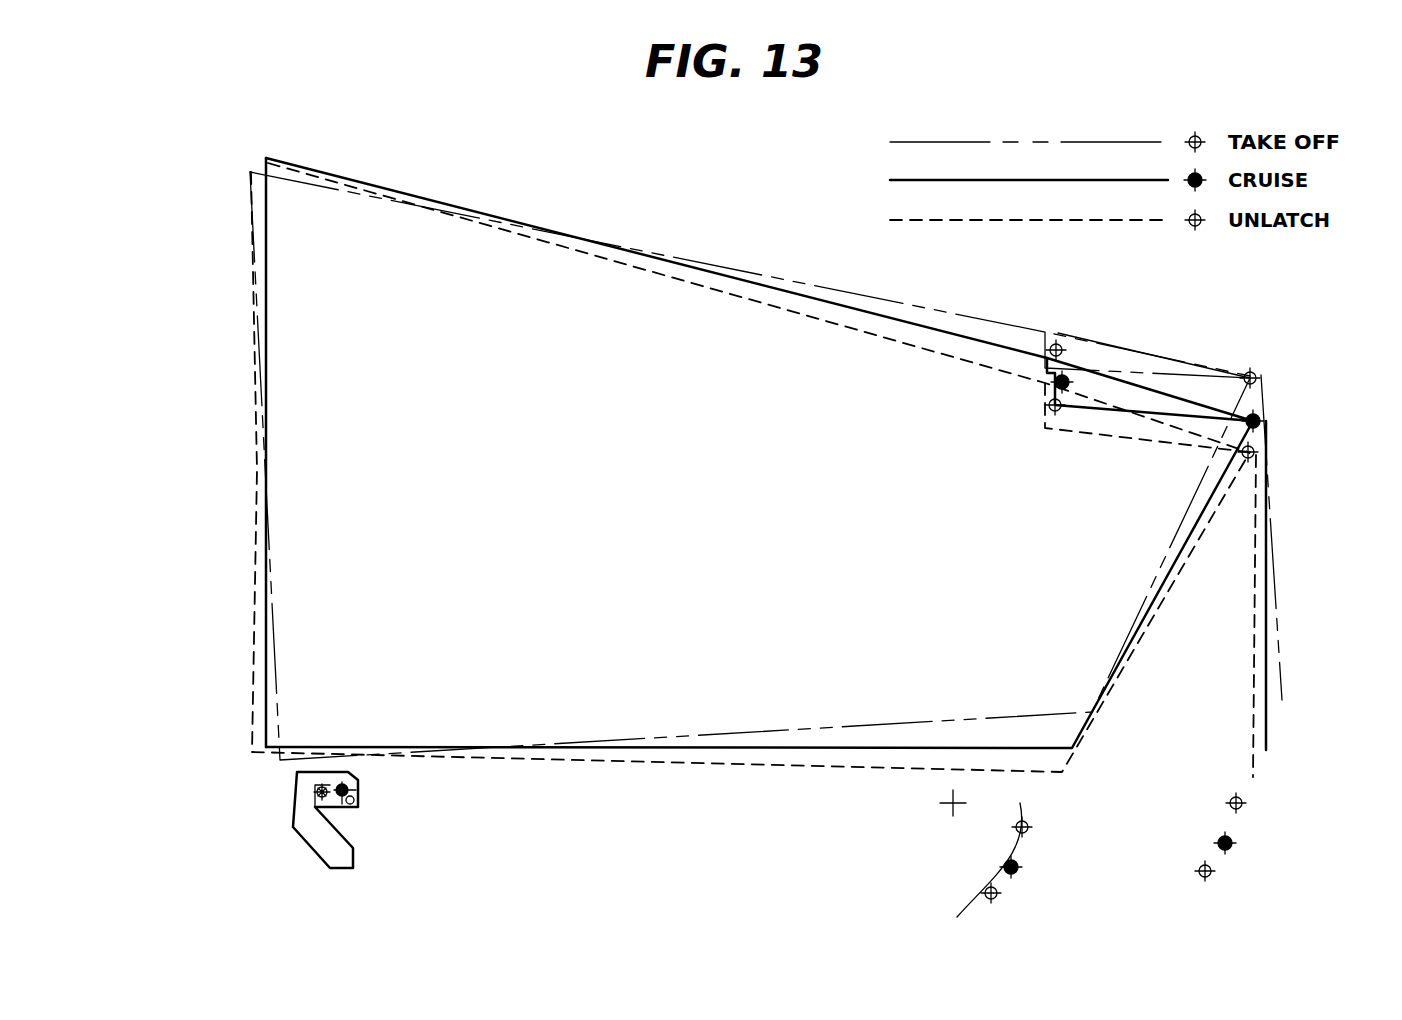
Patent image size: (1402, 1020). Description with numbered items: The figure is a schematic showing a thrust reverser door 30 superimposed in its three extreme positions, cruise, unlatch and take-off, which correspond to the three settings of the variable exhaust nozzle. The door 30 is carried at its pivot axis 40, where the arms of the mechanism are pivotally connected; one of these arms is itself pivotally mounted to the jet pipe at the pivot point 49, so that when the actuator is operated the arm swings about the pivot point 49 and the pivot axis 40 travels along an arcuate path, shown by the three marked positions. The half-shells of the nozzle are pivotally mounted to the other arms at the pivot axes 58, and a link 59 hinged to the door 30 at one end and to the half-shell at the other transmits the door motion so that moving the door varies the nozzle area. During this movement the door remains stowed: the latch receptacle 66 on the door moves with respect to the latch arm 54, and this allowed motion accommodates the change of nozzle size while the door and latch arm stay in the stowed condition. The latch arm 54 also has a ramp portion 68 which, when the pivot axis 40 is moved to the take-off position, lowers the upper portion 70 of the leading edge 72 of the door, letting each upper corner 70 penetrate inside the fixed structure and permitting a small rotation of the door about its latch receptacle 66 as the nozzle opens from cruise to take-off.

The thrust reverser door 30 is at (418, 247).
The upper portion of the leading edge 70 is at (266, 157).
The leading edge 72 is at (265, 365).
The link 59 is at (1064, 377).
The pivot axis 58 is at (1231, 838).
The pivot axis of the thrust reverser door 40 is at (1022, 862).
The pivot point 49 is at (948, 808).
The latch arm 54 is at (305, 845).
The latch receptacle 66 is at (343, 800).
The ramp portion 68 is at (356, 790).